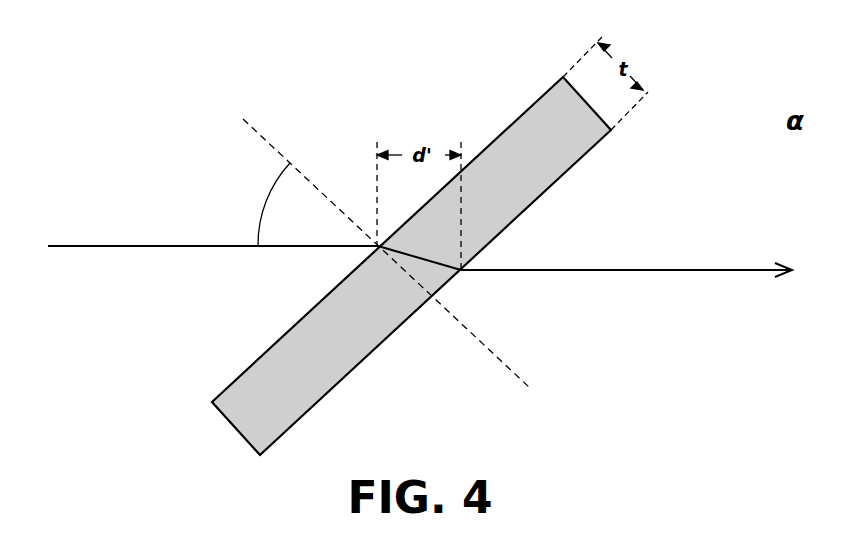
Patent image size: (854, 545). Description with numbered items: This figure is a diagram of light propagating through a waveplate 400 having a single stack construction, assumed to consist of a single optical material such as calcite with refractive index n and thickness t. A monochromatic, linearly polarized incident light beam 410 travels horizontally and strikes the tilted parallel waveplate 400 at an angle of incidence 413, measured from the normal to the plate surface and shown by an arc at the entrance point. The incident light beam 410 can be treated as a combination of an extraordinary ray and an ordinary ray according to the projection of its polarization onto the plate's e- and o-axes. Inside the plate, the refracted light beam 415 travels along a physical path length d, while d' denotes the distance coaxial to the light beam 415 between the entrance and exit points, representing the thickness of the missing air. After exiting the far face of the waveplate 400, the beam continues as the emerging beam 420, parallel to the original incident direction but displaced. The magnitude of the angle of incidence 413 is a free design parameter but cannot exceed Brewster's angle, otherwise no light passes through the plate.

The waveplate 400 is at (320, 323).
The incident light beam 410 is at (103, 243).
The angle of incidence φ 413 is at (260, 203).
The light beam within the waveplate 415 is at (437, 261).
The exiting light beam 420 is at (722, 268).